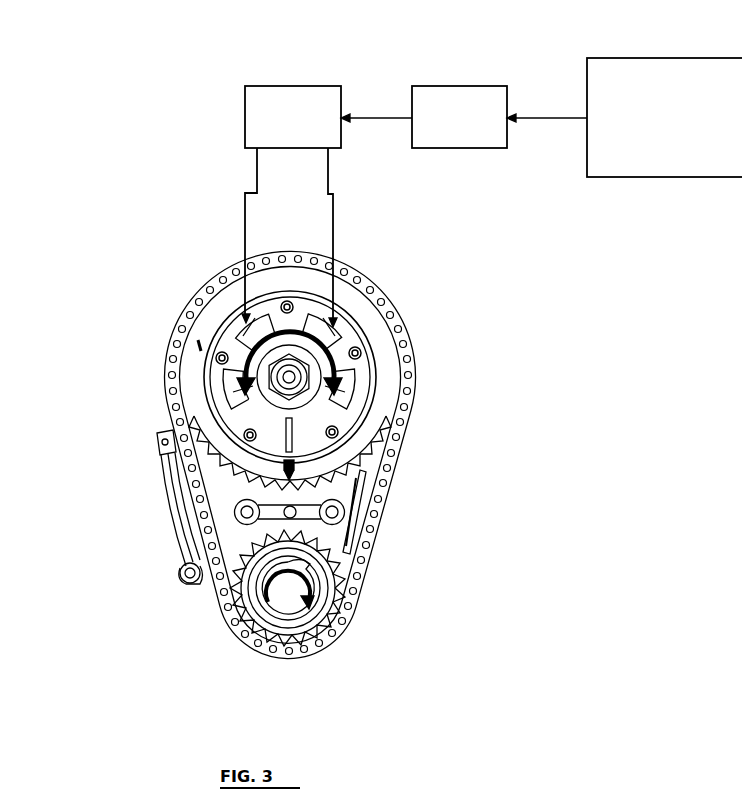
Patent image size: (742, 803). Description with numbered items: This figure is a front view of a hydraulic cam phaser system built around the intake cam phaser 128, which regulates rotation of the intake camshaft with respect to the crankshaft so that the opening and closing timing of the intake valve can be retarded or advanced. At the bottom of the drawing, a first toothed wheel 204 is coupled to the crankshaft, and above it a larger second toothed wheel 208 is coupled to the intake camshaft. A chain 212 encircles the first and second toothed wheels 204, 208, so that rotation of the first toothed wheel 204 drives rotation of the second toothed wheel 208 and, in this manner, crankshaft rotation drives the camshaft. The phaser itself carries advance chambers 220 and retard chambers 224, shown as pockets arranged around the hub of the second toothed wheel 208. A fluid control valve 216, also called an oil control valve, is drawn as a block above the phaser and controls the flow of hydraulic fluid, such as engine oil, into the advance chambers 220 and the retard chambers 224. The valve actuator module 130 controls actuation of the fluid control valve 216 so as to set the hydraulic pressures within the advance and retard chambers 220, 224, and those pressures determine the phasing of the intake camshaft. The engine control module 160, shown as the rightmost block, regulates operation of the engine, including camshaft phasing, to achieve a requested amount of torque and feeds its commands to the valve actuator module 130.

The intake cam phaser 128 is at (76, 66).
The valve actuator module 130 is at (456, 86).
The engine control module 160 is at (675, 58).
The first toothed wheel 204 is at (240, 612).
The second toothed wheel 208 is at (323, 377).
The chain 212 is at (176, 333).
The fluid control valve 216 is at (290, 86).
The advance chambers 220 is at (240, 330).
The retard chambers 224 is at (334, 328).